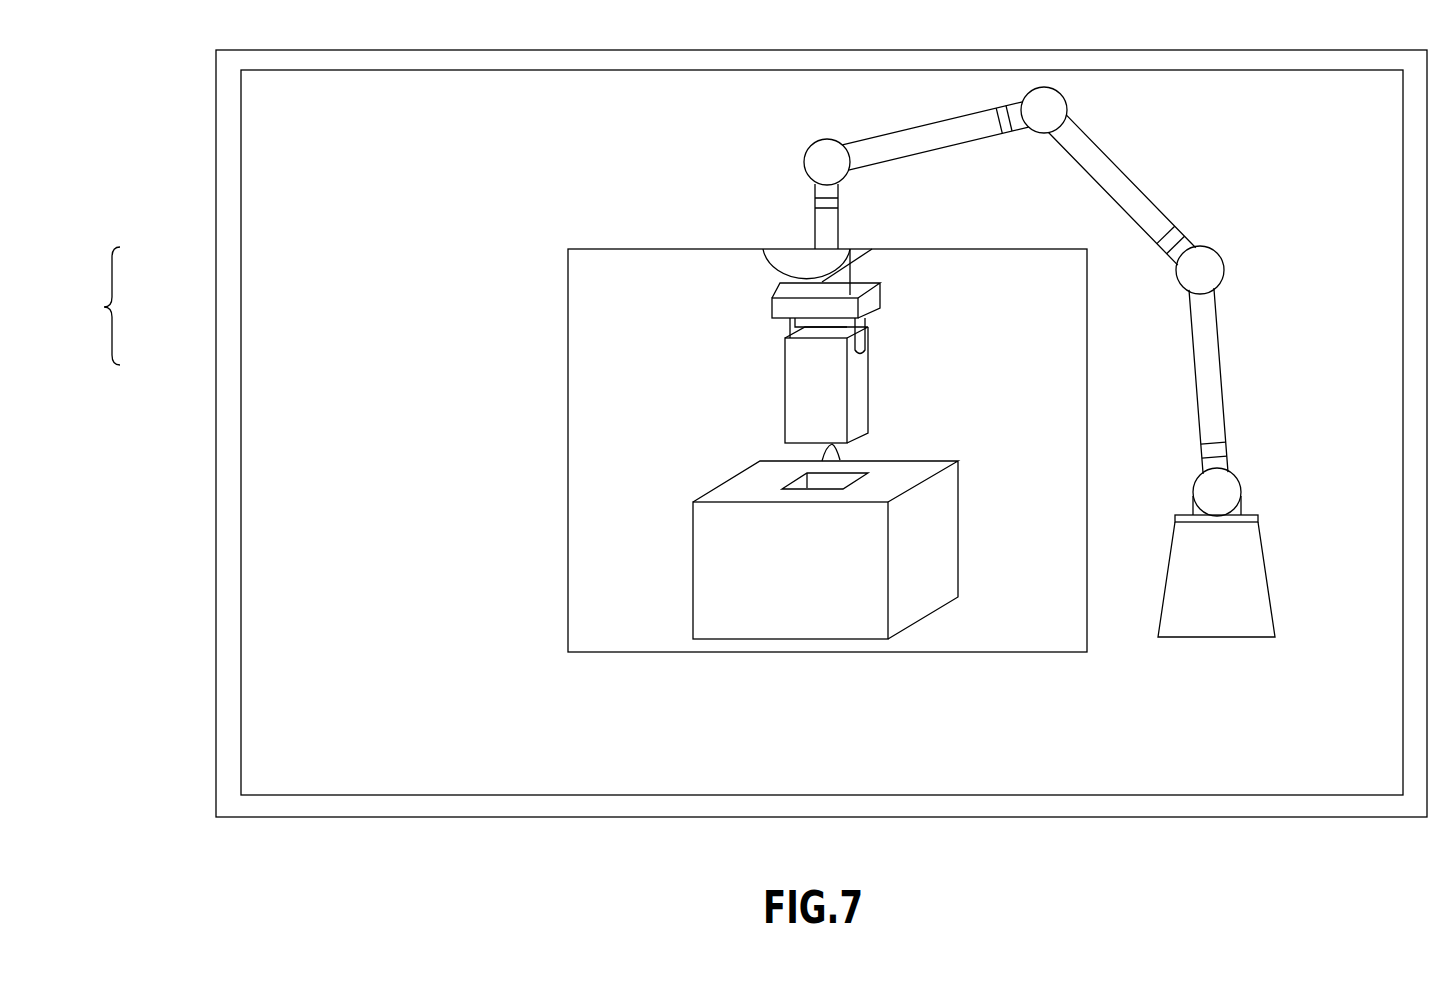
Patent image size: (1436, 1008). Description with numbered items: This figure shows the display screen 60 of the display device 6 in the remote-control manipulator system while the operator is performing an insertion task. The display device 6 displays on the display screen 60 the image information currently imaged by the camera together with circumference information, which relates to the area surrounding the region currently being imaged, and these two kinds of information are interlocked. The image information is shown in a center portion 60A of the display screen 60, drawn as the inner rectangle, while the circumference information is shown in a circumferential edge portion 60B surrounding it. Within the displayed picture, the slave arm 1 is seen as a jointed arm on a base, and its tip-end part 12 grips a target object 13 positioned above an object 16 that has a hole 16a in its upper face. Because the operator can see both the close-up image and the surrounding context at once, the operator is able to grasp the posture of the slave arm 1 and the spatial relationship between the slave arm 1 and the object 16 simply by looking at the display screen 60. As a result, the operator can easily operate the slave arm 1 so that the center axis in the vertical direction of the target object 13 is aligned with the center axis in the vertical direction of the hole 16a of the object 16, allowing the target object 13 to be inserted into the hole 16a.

The display device 6 is at (820, 25).
The slave arm 1 is at (1130, 185).
The display screen 60 is at (97, 306).
The center portion 60A is at (310, 268).
The circumferential edge portion 60B is at (628, 332).
The tip-end part 12 is at (800, 302).
The target object 13 is at (800, 398).
The object 16 is at (710, 522).
The hole 16a is at (835, 445).